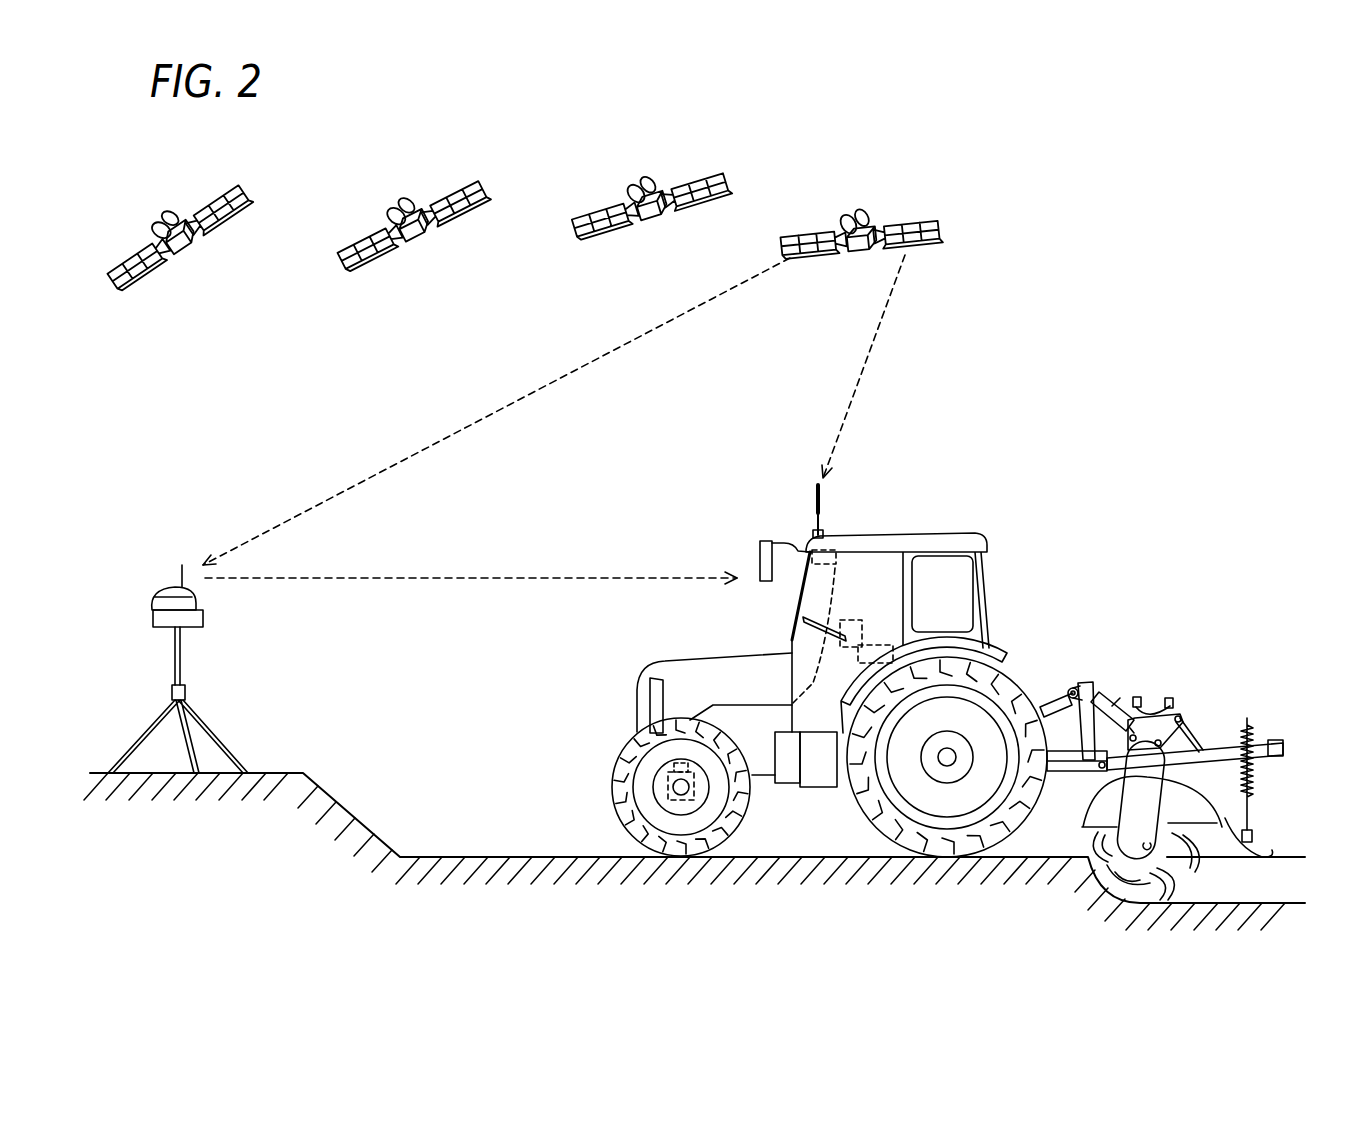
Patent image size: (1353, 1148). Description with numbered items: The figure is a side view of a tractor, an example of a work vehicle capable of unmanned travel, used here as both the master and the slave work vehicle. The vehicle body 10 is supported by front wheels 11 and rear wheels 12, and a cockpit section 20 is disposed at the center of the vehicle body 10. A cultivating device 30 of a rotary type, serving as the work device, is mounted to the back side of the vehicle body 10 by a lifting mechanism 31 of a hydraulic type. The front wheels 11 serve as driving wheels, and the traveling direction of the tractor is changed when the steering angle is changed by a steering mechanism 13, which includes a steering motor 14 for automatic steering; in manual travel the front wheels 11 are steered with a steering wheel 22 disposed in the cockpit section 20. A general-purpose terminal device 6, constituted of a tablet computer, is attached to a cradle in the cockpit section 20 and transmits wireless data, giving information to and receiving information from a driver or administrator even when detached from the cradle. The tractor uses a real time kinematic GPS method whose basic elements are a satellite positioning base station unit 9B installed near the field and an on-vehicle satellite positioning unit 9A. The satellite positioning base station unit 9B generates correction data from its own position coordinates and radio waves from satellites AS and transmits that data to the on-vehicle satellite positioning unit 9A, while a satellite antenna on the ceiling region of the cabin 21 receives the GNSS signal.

The satellites AS is at (168, 220).
The on-vehicle satellite positioning unit 9A is at (800, 470).
The satellite positioning base station unit 9B is at (149, 574).
The general-purpose terminal device 6 is at (844, 620).
The vehicle body 10 is at (800, 671).
The front wheels 11 is at (678, 860).
The rear wheels 12 is at (958, 858).
The steering mechanism 13 is at (668, 790).
The steering motor 14 is at (665, 765).
The cockpit section 20 is at (858, 610).
The cabin 21 is at (972, 548).
The steering wheel 22 is at (832, 573).
The cultivating device 30 is at (1161, 747).
The lifting mechanism 31 is at (1101, 667).